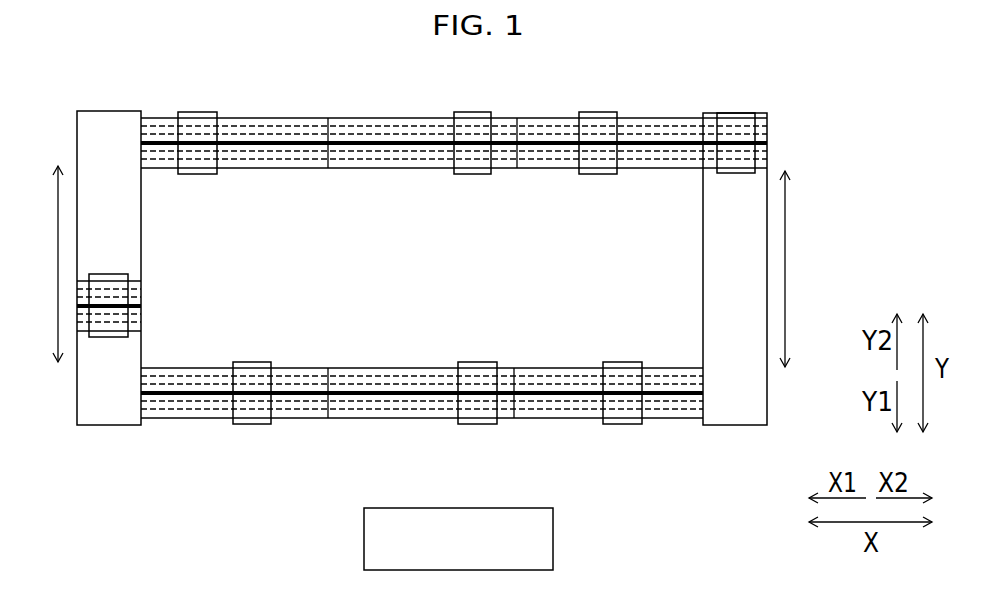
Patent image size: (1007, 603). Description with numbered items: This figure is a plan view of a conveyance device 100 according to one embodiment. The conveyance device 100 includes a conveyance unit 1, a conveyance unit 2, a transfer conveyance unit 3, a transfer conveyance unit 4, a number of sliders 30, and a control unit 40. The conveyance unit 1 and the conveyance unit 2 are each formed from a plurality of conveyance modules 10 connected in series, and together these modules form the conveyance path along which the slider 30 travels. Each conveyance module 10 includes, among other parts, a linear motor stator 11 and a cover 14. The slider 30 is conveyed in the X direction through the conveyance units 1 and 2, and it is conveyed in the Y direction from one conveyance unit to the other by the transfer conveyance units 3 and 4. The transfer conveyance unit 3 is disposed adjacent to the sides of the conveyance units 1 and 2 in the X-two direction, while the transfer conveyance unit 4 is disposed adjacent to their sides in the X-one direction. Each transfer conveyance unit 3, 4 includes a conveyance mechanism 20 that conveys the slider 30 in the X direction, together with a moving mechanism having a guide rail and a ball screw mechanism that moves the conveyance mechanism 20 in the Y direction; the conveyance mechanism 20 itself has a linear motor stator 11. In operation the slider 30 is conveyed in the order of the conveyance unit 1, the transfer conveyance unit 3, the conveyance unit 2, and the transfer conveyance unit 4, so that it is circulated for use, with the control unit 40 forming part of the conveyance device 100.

The conveyance device 100 is at (778, 84).
The conveyance unit 1 is at (528, 78).
The conveyance unit 2 is at (560, 338).
The transfer conveyance unit 3 is at (805, 222).
The transfer conveyance unit 4 is at (53, 112).
The conveyance module 10 is at (300, 118).
The linear motor stator 11 is at (300, 149).
The cover 14 is at (246, 128).
The conveyance mechanism 20 is at (707, 173).
The slider 30 is at (201, 112).
The control unit 40 is at (526, 508).